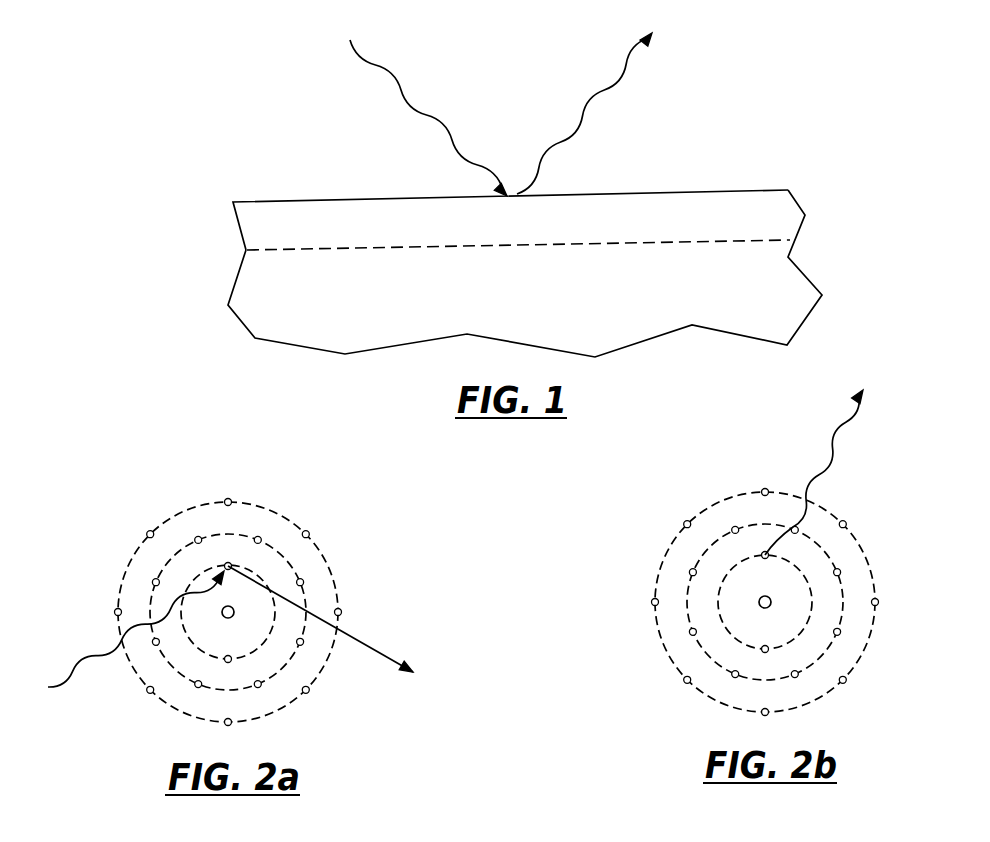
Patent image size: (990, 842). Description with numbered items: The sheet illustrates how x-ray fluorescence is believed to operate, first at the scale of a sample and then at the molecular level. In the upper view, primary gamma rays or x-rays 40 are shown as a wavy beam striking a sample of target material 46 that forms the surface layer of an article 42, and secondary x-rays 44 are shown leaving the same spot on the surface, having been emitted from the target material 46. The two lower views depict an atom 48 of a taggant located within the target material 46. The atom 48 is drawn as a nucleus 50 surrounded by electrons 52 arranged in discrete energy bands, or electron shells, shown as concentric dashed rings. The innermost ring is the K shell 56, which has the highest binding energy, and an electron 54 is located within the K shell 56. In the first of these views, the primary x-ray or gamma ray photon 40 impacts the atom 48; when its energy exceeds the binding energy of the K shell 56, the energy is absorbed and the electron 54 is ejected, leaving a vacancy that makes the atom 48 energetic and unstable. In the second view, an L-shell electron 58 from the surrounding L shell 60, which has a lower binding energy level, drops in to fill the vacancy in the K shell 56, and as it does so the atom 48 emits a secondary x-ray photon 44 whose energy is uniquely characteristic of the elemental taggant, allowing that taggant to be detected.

In FIG. 1, the primary gamma rays or x-rays 40 is at (417, 110).
In FIG. 2A, the primary gamma rays or x-rays 40 is at (95, 650).
In FIG. 1, the article 42 is at (770, 292).
In FIG. 1, the secondary x-rays 44 is at (598, 106).
In FIG. 2B, the secondary x-rays 44 is at (823, 442).
In FIG. 1, the target material 46 is at (762, 223).
In FIG. 2A, the atom 48 is at (251, 609).
In FIG. 2B, the atom 48 is at (784, 597).
In FIG. 2A, the nucleus 50 is at (233, 618).
In FIG. 2B, the nucleus 50 is at (768, 606).
In FIG. 2A, the electrons 52 is at (227, 722).
In FIG. 2A, the electron 54 is at (228, 566).
In FIG. 2A, the K shell 56 is at (193, 643).
In FIG. 2B, the K shell 56 is at (732, 638).
In FIG. 2B, the L-shell electron 58 is at (757, 548).
In FIG. 2B, the L shell 60 is at (842, 590).